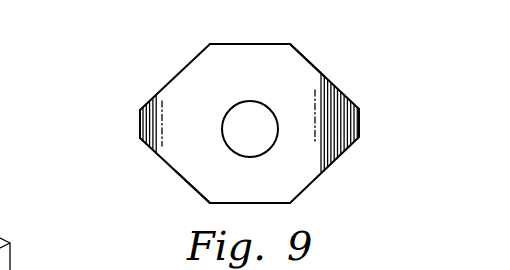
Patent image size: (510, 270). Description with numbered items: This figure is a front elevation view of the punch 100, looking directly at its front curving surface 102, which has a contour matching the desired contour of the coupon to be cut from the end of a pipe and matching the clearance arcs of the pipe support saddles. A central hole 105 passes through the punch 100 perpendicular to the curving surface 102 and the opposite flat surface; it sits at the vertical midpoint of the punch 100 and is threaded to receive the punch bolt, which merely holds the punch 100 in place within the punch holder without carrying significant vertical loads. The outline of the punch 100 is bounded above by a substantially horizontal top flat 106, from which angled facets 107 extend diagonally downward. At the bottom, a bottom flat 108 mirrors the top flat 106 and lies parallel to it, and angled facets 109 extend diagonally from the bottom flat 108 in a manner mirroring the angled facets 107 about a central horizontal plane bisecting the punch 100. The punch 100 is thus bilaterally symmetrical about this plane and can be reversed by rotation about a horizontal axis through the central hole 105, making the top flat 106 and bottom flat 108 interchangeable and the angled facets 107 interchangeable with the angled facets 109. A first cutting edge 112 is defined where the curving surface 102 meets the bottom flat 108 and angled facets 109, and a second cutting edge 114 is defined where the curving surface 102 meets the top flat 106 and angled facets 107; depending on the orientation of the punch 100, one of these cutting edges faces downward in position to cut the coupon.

The punch 100 is at (129, 84).
The front curving surface 102 is at (215, 131).
The central hole 105 is at (270, 138).
The top flat 106 is at (263, 43).
The angled facets 107 is at (191, 62).
The bottom flat 108 is at (275, 203).
The angled facets 109 is at (162, 158).
The first cutting edge 112 is at (190, 185).
The second cutting edge 114 is at (299, 52).